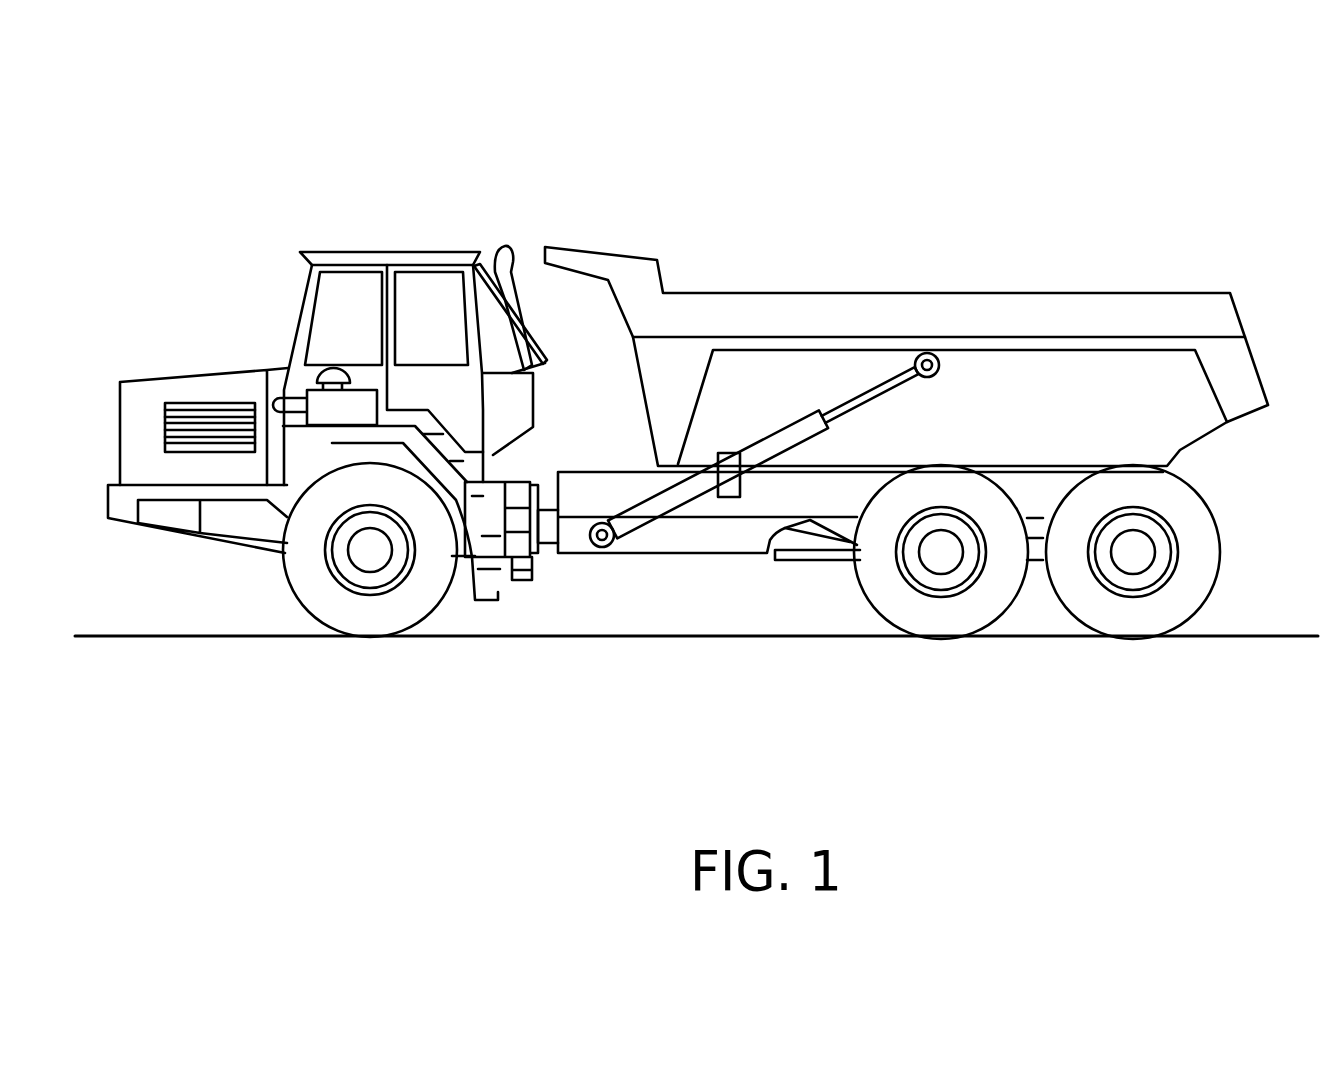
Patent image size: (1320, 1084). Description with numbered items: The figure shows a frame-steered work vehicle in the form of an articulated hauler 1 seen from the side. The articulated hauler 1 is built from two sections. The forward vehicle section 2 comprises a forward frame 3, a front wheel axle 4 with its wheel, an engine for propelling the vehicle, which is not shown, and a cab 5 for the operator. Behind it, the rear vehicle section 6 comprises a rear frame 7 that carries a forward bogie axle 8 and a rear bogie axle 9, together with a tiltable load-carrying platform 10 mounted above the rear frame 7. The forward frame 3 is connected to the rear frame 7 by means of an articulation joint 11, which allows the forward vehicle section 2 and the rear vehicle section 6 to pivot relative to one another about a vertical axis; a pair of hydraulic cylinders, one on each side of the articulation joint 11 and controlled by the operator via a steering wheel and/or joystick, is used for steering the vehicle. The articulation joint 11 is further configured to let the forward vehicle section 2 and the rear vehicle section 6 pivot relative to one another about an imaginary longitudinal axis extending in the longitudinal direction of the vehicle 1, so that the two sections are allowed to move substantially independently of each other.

The articulated hauler 1 is at (866, 188).
The forward vehicle section 2 is at (376, 660).
The forward frame 3 is at (530, 573).
The front wheel axle 4 is at (370, 550).
The cab 5 is at (408, 260).
The rear vehicle section 6 is at (906, 662).
The rear frame 7 is at (757, 495).
The forward bogie axle 8 is at (941, 552).
The rear bogie axle 9 is at (1133, 552).
The tiltable load-carrying platform 10 is at (1108, 303).
The articulation joint 11 is at (559, 568).